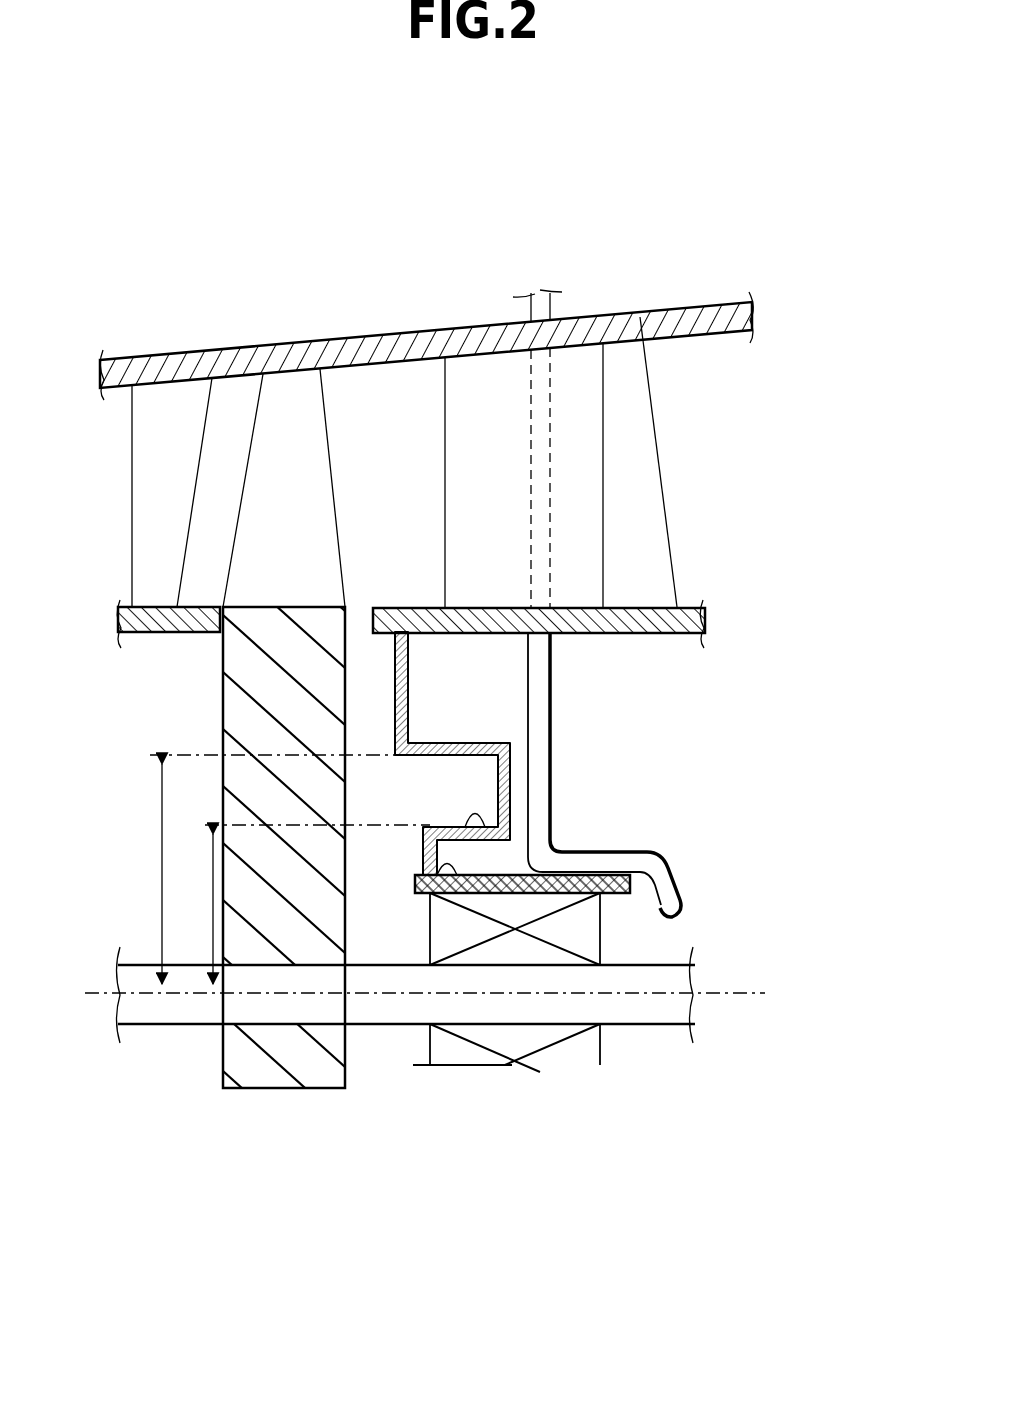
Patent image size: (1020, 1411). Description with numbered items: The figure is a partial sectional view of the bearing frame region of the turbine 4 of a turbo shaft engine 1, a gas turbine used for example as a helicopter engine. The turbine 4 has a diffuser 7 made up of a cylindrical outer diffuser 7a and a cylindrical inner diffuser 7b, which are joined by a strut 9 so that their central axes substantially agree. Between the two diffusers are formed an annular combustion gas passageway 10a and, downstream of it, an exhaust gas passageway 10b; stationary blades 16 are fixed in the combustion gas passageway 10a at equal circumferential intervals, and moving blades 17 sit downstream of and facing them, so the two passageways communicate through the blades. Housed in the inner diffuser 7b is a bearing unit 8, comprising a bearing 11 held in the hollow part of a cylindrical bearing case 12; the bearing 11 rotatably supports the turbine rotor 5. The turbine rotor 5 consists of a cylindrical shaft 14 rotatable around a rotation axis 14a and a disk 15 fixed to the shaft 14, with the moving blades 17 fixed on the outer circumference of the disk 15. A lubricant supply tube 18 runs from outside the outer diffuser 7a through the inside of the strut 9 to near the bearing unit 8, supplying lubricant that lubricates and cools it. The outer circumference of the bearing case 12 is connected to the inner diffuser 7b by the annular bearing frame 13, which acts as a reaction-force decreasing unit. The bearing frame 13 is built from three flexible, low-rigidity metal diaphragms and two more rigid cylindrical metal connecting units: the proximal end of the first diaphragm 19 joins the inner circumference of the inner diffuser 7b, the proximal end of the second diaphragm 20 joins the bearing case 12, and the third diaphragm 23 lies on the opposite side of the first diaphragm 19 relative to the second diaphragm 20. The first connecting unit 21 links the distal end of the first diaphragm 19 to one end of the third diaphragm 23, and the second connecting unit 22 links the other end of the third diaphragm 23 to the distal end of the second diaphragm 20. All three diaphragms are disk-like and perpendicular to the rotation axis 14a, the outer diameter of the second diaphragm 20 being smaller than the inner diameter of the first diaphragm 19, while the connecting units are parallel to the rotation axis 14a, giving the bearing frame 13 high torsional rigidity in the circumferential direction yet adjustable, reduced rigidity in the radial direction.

The turbo shaft engine 1 is at (362, 121).
The turbine 4 is at (377, 333).
The turbine rotor 5 is at (128, 1077).
The diffuser 7 is at (570, 167).
The outer diffuser 7a is at (724, 304).
The inner diffuser 7b is at (640, 317).
The bearing unit 8 is at (698, 1065).
The strut 9 is at (480, 397).
The combustion gas passageway 10a is at (223, 460).
The exhaust gas passageway 10b is at (632, 545).
The bearing 11 is at (495, 733).
The bearing case 12 is at (587, 1052).
The bearing frame 13 is at (708, 1260).
The shaft 14 is at (197, 1012).
The rotation axis 14a is at (90, 993).
The disk 15 is at (247, 1060).
The stationary blades 16 is at (157, 508).
The moving blades 17 is at (270, 565).
The lubricant supply tube 18 is at (540, 773).
The first diaphragm 19 is at (395, 700).
The second diaphragm 20 is at (487, 840).
The first connecting unit 21 is at (634, 893).
The second connecting unit 22 is at (493, 887).
The third diaphragm 23 is at (493, 780).